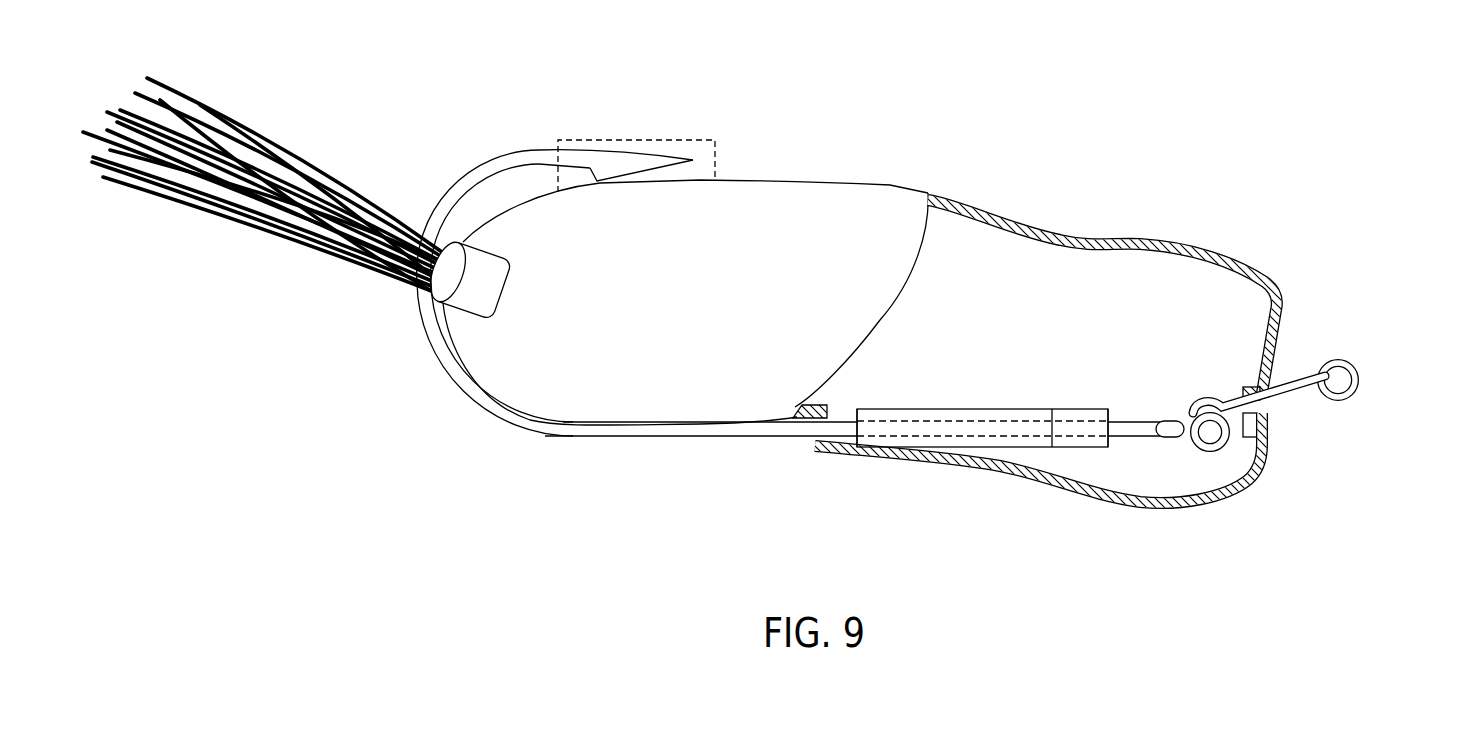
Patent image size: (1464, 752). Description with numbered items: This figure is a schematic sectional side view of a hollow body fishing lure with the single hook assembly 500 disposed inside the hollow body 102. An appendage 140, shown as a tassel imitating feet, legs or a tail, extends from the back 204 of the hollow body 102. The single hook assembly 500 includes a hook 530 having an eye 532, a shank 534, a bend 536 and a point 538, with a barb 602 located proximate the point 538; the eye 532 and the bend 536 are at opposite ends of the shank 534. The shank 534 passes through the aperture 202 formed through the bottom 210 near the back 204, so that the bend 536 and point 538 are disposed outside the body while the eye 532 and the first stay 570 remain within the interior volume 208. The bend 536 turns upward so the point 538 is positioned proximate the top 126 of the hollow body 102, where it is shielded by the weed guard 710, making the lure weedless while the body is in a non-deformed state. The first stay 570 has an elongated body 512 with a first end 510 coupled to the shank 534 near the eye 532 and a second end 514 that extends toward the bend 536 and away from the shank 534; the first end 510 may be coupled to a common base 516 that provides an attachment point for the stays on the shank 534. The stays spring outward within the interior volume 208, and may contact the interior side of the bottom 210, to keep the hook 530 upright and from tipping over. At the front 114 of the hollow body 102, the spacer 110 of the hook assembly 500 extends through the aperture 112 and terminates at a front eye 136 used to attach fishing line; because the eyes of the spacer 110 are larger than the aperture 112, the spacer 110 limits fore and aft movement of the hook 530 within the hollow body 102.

The hollow body 102 is at (839, 305).
The spacer 110 is at (1323, 372).
The aperture 112 is at (1267, 412).
The front 114 is at (1287, 320).
The top 126 is at (890, 185).
The front eye 136 is at (1357, 365).
The appendage 140 is at (329, 153).
The aperture 202 is at (820, 416).
The back 204 is at (447, 348).
The interior volume 208 is at (987, 253).
The bottom 210 is at (858, 450).
The single hook assembly 500 is at (1048, 447).
The first end 510 is at (1052, 432).
The elongated body 512 is at (980, 408).
The second end 514 is at (857, 410).
The base 516 is at (1100, 408).
The hook 530 is at (760, 296).
The eye 532 is at (1172, 428).
The shank 534 is at (667, 428).
The bend 536 is at (410, 300).
The point 538 is at (633, 152).
The first stay 570 is at (938, 408).
The barb 602 is at (594, 176).
The weed guard 710 is at (717, 162).